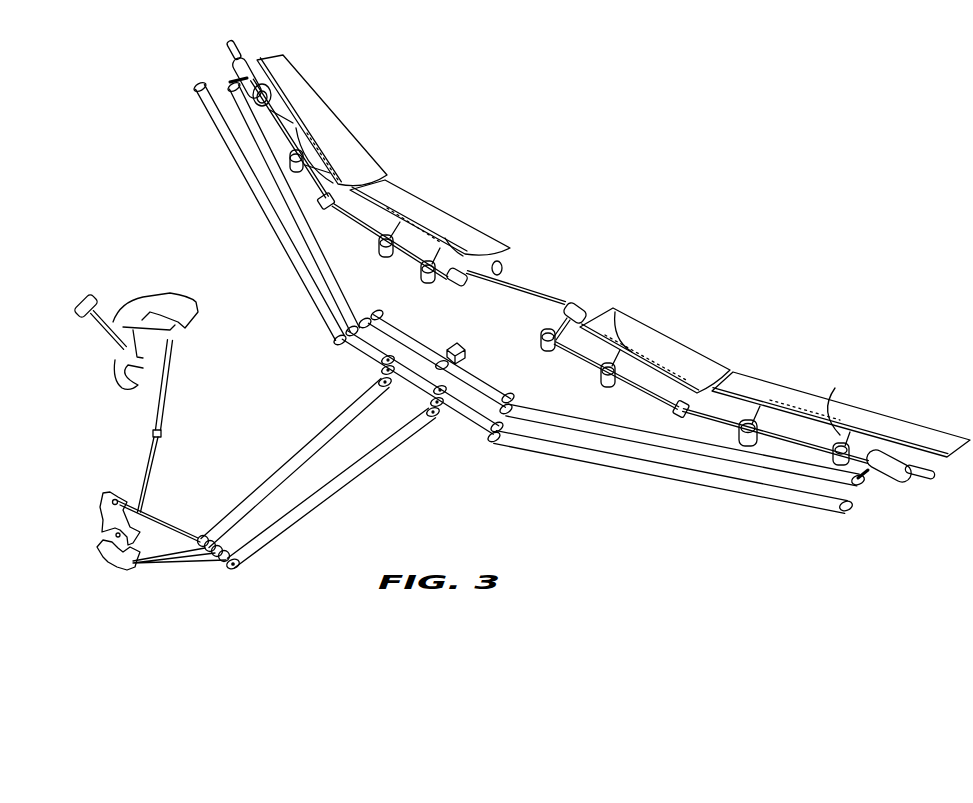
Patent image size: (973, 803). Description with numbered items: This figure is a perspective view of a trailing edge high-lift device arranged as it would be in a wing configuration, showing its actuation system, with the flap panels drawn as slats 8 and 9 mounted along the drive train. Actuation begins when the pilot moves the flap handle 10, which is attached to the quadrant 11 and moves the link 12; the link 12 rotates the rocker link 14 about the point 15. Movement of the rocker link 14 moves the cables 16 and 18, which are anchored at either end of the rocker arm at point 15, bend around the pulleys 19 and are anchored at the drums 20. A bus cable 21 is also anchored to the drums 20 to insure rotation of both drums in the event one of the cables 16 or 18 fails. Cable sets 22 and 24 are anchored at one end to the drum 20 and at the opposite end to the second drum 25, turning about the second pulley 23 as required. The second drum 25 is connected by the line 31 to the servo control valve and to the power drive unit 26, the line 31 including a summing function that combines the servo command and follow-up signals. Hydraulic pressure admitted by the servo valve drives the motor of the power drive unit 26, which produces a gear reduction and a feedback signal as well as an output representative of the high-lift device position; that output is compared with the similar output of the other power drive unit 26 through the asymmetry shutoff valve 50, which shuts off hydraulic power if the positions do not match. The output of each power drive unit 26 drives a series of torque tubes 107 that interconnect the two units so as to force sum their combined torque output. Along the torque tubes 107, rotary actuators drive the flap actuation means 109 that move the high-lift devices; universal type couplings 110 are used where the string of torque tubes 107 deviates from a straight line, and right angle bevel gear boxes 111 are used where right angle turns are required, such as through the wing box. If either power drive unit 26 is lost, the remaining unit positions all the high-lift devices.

The end slat 8 is at (351, 126).
The intermediate slat 9 is at (445, 204).
The flap handle 10 is at (80, 294).
The quadrant 11 is at (134, 296).
The link 12 is at (164, 386).
The rocker link 14 is at (100, 506).
The point 15 is at (115, 550).
The cable 16 is at (276, 530).
The cable 18 is at (233, 508).
The pulleys 19 is at (243, 568).
The drums 20 is at (382, 370).
The bus cable 21 is at (432, 393).
The cable set 22 is at (660, 478).
The second pulley 23 is at (335, 342).
The cable set 24 is at (304, 276).
The second drum 25 is at (197, 90).
The power drive unit 26 is at (236, 45).
The line 31 is at (220, 75).
The asymmetry shutoff valve 50 is at (461, 344).
The torque tubes 107 is at (345, 173).
The flap actuation means 109 is at (312, 132).
The universal type couplings 110 is at (323, 204).
The right angle bevel gear boxes 111 is at (556, 309).